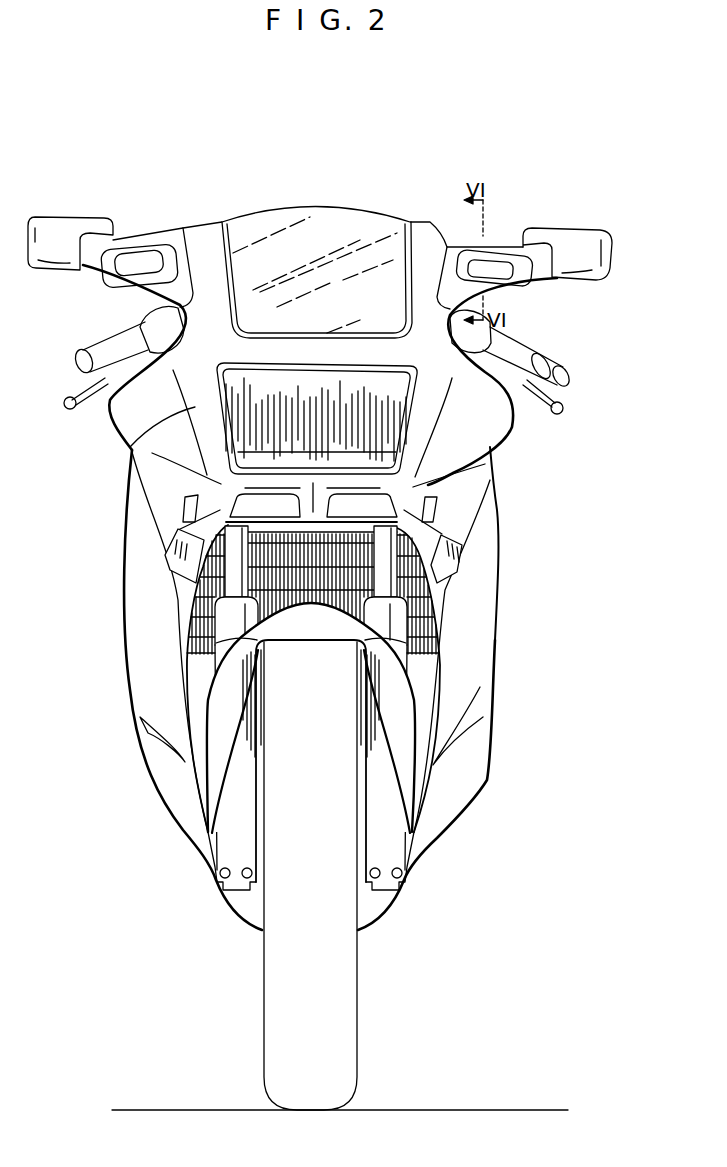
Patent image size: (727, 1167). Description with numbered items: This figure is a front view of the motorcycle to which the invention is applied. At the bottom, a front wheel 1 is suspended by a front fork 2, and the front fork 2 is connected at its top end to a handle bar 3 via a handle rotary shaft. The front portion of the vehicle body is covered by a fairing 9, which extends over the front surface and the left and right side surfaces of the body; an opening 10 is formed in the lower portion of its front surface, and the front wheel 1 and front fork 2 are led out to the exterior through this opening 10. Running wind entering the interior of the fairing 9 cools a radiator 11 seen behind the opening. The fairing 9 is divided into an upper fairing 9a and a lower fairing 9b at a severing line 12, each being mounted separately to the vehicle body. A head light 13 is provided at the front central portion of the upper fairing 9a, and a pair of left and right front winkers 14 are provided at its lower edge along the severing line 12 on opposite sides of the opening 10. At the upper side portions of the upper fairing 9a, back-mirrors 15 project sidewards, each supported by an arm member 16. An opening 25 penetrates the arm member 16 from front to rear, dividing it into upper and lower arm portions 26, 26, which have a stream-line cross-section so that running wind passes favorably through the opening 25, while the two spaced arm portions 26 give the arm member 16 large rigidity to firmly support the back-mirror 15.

The front wheel 1 is at (340, 993).
The front fork 2 is at (187, 598).
The handle bar 3 is at (112, 357).
The fairing 9 is at (512, 501).
The upper fairing 9a is at (130, 448).
The lower fairing 9b is at (137, 587).
The opening 10 is at (423, 733).
The radiator 11 is at (423, 635).
The severing line 12 is at (143, 518).
The head light 13 is at (408, 434).
The front winkers 14 is at (173, 558).
The back-mirror 15 is at (65, 212).
The arm member 16 is at (138, 243).
The opening 25 is at (505, 275).
The arm portions 26 is at (514, 250).